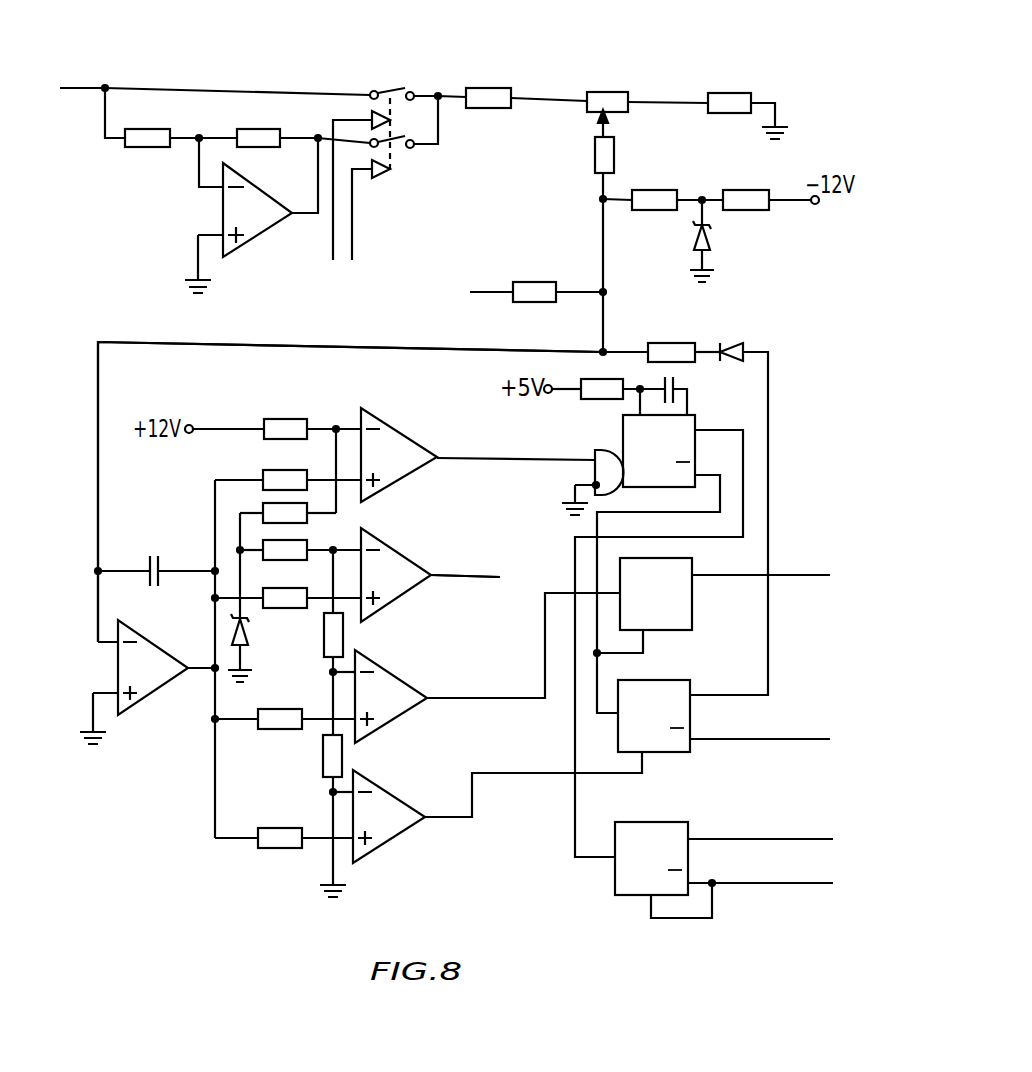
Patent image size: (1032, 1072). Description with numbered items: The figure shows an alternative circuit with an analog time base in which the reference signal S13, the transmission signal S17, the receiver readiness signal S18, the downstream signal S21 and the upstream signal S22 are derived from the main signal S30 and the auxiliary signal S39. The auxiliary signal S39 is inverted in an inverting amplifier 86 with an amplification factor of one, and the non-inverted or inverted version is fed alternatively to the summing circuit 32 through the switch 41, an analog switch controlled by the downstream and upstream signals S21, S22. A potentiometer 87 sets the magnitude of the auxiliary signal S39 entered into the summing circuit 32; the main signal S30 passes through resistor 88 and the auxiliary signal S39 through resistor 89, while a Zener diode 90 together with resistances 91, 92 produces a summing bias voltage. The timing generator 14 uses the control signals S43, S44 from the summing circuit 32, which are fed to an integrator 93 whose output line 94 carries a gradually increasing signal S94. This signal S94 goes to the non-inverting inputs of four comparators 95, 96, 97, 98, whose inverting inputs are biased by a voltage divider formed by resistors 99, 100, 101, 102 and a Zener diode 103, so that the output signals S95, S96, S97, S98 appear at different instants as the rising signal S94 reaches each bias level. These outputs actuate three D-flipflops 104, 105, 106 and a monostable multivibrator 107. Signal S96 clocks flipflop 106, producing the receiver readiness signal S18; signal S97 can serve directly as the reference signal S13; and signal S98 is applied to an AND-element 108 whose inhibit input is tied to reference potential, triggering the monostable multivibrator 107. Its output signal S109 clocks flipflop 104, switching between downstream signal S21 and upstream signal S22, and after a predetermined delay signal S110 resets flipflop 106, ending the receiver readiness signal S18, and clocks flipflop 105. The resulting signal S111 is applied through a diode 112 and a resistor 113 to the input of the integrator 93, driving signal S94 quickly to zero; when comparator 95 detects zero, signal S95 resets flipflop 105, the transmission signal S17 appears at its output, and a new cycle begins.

The timing generator 14 is at (165, 843).
The summing circuit 32 is at (676, 88).
The switch 41 is at (416, 86).
The inverting amplifier 86 is at (268, 197).
The potentiometer 87 is at (710, 112).
The resistor 88 is at (535, 280).
The resistor 89 is at (591, 244).
The Zener diode 90 is at (714, 241).
The resistance 91 is at (663, 188).
The resistance 92 is at (771, 188).
The integrator 93 is at (147, 682).
The output line 94 is at (207, 768).
The comparator 95 is at (389, 816).
The comparator 96 is at (391, 696).
The comparator 97 is at (396, 575).
The comparator 98 is at (399, 455).
The resistor 99 is at (277, 416).
The resistor 100 is at (265, 507).
The resistor 101 is at (345, 636).
The resistor 102 is at (323, 755).
The Zener diode 103 is at (237, 631).
The D-flipflop 104 is at (650, 832).
The D-flipflop 105 is at (682, 683).
The D-flipflop 106 is at (692, 603).
The monostable multivibrator 107 is at (623, 432).
The AND-element 108 is at (592, 471).
The diode 112 is at (729, 503).
The resistor 113 is at (661, 336).
The reference signal S13 is at (480, 575).
The transmission signal S17 is at (777, 740).
The receiver readiness signal S18 is at (790, 573).
The downstream signal S21 is at (350, 248).
The upstream signal S22 is at (328, 248).
The main signal S30 is at (489, 282).
The auxiliary signal S39 is at (84, 83).
The control signal S43 is at (332, 343).
The control signal S44 is at (350, 492).
The gradually increasing signal S94 is at (90, 820).
The output signal S95 is at (520, 770).
The output signal S96 is at (478, 697).
The output signal S97 is at (438, 573).
The output signal S98 is at (482, 456).
The signal S109 is at (745, 440).
The signal S110 is at (722, 497).
The signal S111 is at (766, 673).